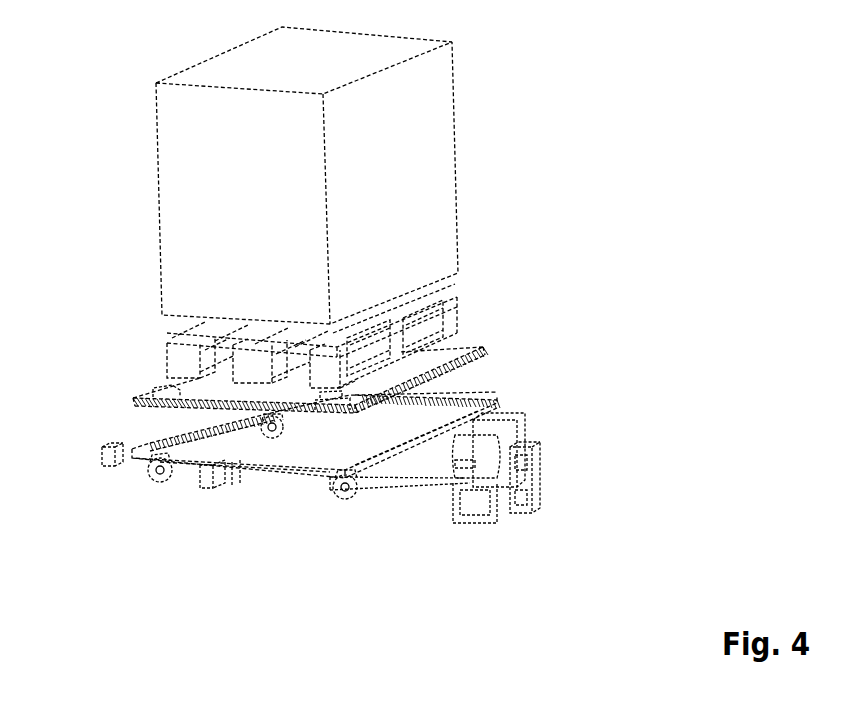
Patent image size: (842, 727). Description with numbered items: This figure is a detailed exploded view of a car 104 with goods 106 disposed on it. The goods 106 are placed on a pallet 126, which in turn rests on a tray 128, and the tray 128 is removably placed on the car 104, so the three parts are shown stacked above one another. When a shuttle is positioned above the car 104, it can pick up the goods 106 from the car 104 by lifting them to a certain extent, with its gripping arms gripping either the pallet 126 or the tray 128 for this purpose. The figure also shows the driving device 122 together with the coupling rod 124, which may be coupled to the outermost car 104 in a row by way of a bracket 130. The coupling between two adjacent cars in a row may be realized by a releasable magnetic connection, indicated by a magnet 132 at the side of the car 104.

The car 104 is at (370, 453).
The goods 106 is at (432, 210).
The driving device 122 is at (527, 483).
The coupling rod 124 is at (433, 488).
The pallet 126 is at (455, 307).
The tray 128 is at (473, 353).
The bracket 130 is at (205, 466).
The magnet 132 is at (100, 458).